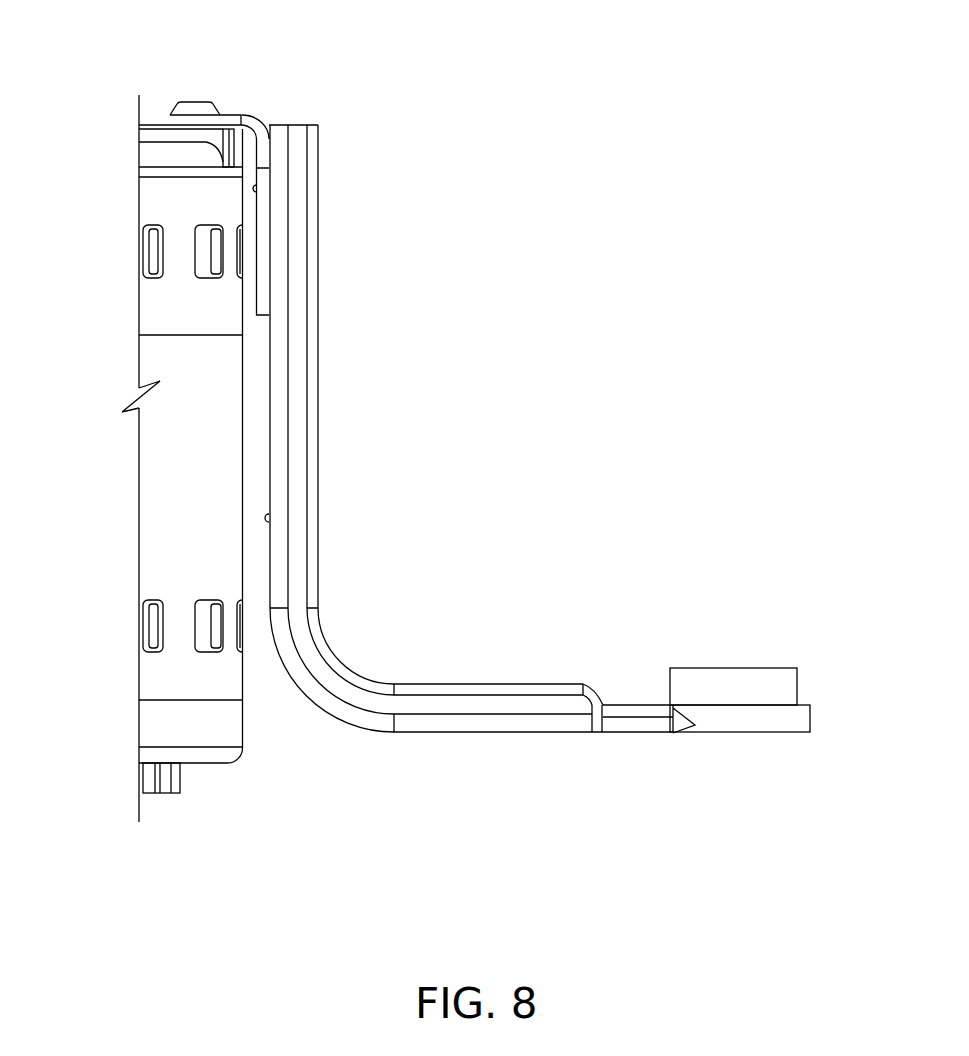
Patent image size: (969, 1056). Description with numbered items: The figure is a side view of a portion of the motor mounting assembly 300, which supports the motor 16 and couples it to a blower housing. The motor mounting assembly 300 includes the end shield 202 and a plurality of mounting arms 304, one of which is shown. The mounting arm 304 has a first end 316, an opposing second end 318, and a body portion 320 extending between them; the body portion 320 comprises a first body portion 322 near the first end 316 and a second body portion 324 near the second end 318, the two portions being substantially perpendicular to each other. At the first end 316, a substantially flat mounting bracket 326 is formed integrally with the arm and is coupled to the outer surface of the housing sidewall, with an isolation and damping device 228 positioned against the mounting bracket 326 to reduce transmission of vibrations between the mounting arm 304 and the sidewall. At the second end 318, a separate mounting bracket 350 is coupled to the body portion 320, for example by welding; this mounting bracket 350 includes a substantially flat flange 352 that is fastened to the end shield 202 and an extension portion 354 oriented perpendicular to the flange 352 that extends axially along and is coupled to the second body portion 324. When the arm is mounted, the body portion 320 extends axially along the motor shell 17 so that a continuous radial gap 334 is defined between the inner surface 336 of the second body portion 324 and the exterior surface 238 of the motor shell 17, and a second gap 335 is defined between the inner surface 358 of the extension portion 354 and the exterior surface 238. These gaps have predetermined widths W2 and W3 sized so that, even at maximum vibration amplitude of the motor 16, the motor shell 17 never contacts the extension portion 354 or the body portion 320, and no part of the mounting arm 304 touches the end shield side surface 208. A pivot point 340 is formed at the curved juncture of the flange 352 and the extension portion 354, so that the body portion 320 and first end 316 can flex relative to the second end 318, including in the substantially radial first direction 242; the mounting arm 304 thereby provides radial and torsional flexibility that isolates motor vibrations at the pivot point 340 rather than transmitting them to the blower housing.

The motor 16 is at (153, 497).
The motor shell 17 is at (157, 432).
The end shield 202 is at (153, 157).
The end shield side surface 208 is at (232, 150).
The isolation and damping device 228 is at (733, 680).
The exterior surface 238 is at (243, 457).
The first direction 242 is at (215, 388).
The motor mounting assembly 300 is at (373, 76).
The mounting arm 304 is at (342, 677).
The first end 316 is at (723, 752).
The second end 318 is at (257, 107).
The body portion 320 is at (307, 593).
The first body portion 322 is at (490, 716).
The second body portion 324 is at (307, 435).
The mounting bracket 326 is at (767, 724).
The radial gap 334 is at (258, 638).
The second gap 335 is at (250, 318).
The inner surface 336 is at (272, 522).
The pivot point 340 is at (261, 117).
The mounting bracket 350 is at (265, 156).
The flange 352 is at (180, 121).
The extension portion 354 is at (263, 245).
The inner surface 358 is at (259, 190).
The width W2 is at (203, 481).
The radial width W3 is at (200, 202).